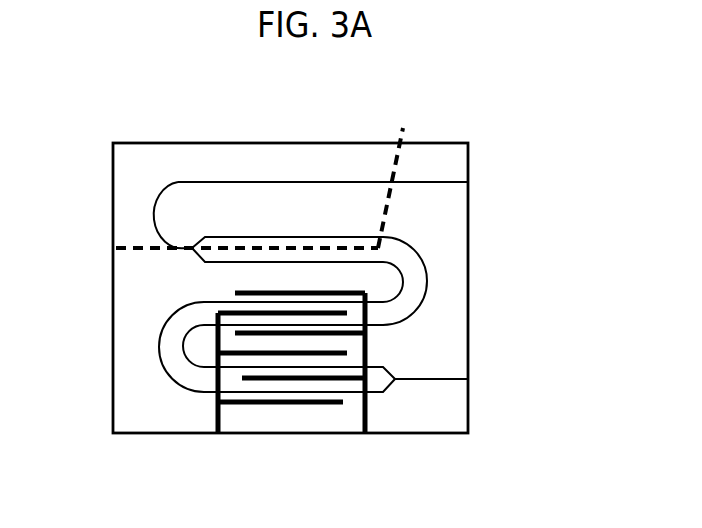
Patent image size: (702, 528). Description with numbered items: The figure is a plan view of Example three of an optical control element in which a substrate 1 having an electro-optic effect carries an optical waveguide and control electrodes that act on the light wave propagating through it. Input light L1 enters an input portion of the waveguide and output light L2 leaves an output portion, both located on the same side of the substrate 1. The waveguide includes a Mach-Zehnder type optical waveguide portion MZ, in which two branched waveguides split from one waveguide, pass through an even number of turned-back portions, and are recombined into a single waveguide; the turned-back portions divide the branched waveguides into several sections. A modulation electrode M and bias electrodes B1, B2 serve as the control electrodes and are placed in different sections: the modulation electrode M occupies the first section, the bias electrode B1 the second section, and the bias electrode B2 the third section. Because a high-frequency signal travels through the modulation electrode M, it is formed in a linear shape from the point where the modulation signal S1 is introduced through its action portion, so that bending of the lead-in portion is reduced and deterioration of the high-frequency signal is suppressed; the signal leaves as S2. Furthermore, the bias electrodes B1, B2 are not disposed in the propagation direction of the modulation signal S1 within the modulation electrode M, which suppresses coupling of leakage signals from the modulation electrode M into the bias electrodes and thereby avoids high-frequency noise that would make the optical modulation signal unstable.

The substrate 1 is at (433, 143).
The modulation electrode M is at (277, 248).
The Mach-Zehnder type optical waveguide portion MZ is at (446, 278).
The modulation signal S1 is at (88, 248).
The output signal light S2 is at (396, 163).
The input light L1 is at (497, 183).
The output light L2 is at (472, 379).
The bias electrode B1 is at (347, 315).
The bias electrode B2 is at (275, 382).